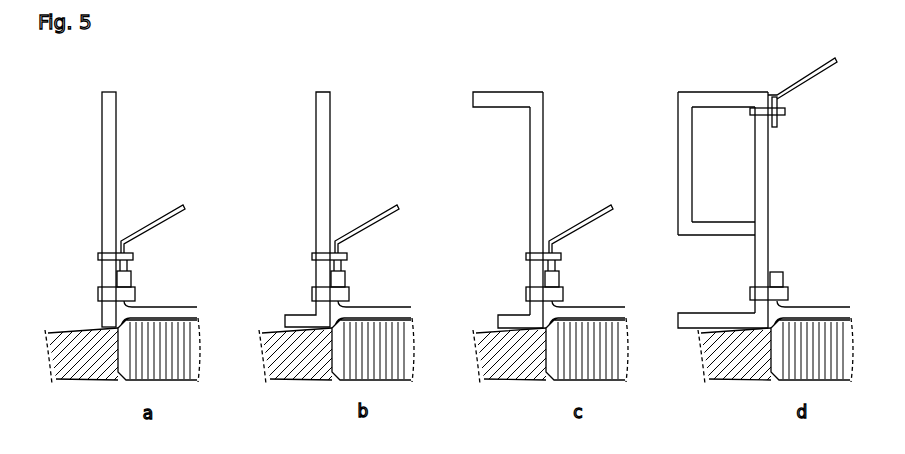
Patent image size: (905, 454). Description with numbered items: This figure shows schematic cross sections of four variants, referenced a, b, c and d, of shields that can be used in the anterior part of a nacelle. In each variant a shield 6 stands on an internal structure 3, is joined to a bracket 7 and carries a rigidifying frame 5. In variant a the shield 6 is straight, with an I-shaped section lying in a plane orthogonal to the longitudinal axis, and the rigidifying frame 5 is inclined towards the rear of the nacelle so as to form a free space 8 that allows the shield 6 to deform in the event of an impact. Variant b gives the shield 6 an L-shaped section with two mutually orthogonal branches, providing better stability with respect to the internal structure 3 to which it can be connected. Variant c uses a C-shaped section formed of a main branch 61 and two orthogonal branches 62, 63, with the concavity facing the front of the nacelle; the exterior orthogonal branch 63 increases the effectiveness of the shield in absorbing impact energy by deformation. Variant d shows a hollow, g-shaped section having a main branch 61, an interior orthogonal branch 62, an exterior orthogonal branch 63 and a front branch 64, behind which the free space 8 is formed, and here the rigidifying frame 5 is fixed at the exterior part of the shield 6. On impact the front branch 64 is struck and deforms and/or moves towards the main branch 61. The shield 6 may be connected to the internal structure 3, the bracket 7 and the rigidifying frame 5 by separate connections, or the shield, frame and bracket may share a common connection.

The internal structure 3 is at (93, 358).
The rigidifying frame 5 is at (158, 227).
The shield 6 is at (112, 150).
The bracket 7 is at (153, 315).
The free space 8 is at (130, 214).
The main branch 61 is at (538, 123).
The orthogonal branch 62 is at (512, 322).
The exterior orthogonal branch 63 is at (490, 97).
The front branch 64 is at (685, 182).